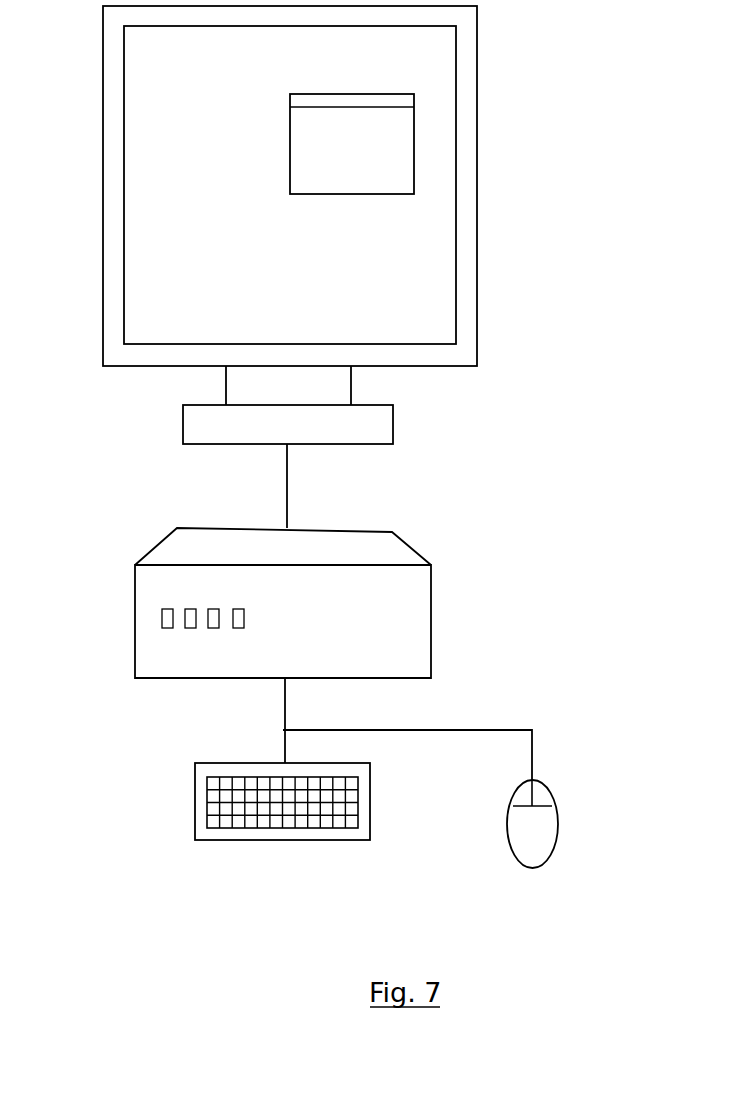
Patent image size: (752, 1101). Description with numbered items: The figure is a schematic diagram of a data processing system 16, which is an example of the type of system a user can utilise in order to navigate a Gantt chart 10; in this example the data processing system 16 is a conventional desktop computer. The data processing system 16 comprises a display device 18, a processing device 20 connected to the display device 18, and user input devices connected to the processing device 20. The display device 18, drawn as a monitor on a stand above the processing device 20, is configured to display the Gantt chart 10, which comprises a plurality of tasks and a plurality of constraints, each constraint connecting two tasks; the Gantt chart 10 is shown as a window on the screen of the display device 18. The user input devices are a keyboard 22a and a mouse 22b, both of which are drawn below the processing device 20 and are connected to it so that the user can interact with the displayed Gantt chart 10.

The Gantt chart 10 is at (290, 157).
The data processing system 16 is at (524, 444).
The display device 18 is at (478, 120).
The processing device 20 is at (135, 617).
The keyboard 22a is at (195, 815).
The mouse 22b is at (558, 818).